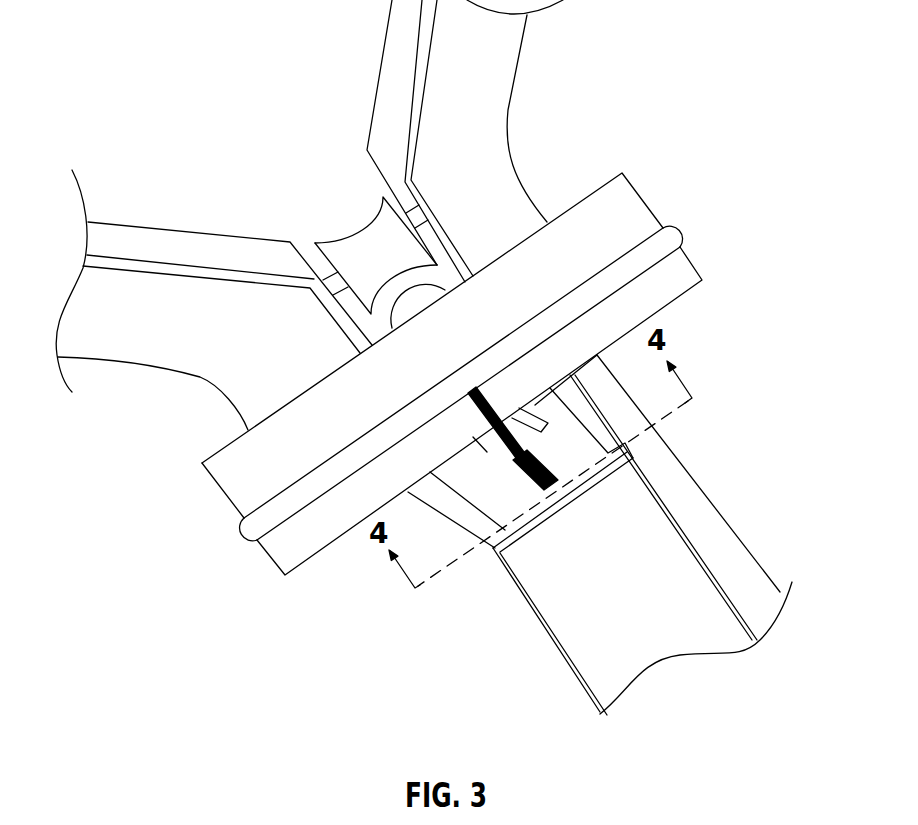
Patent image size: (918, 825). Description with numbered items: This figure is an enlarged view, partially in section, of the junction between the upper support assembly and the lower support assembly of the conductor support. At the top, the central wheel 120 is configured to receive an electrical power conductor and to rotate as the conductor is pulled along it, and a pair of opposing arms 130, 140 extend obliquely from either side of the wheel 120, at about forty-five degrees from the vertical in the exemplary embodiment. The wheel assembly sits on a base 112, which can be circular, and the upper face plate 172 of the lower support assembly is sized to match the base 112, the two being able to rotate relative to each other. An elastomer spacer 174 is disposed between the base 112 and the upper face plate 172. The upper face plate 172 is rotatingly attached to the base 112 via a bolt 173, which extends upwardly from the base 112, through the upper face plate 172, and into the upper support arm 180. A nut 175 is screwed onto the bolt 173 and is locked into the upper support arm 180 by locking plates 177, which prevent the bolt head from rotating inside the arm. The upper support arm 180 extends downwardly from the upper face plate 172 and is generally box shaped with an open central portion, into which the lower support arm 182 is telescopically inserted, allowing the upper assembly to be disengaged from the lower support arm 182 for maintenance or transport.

The base 112 is at (638, 193).
The central wheel 120 is at (362, 228).
The arm 130 is at (166, 252).
The arm 140 is at (403, 77).
The upper face plate 172 is at (695, 263).
The bolt 173 is at (422, 298).
The elastomer spacer 174 is at (243, 532).
The nut 175 is at (489, 455).
The locking plates 177 is at (607, 437).
The upper support arm 180 is at (707, 521).
The lower support arm 182 is at (752, 563).